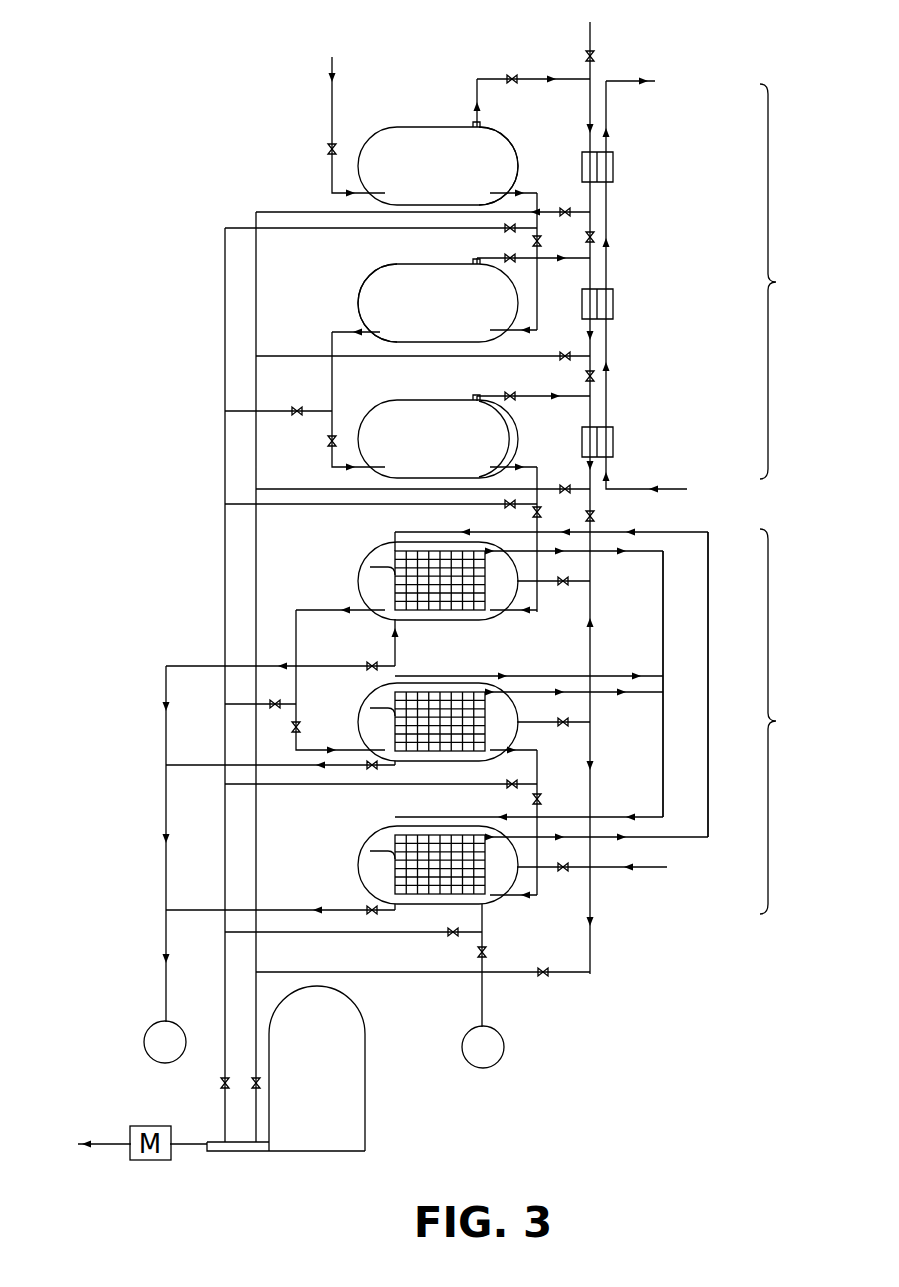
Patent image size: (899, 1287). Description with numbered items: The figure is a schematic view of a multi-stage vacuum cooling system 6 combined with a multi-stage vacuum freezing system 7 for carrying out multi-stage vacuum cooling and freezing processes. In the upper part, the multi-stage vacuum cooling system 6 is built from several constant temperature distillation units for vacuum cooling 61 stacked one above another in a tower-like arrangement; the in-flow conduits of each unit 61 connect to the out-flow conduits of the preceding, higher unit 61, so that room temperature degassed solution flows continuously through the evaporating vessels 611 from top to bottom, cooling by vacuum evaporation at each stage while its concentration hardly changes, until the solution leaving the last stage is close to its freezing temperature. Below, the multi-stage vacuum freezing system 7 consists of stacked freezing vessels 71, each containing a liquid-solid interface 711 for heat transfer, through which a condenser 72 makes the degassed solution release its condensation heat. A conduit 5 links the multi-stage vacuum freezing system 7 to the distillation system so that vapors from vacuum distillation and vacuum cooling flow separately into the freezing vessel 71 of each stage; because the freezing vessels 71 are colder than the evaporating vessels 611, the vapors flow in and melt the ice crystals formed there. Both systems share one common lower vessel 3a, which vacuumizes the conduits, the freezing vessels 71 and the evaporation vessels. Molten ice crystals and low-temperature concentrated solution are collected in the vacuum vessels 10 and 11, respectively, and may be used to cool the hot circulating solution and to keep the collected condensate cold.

The constant temperature distillation unit for vacuum cooling 61 is at (420, 122).
The evaporating vessel 611 is at (516, 148).
The multi-stage vacuum cooling system 6 is at (780, 281).
The multi-stage vacuum freezing system 7 is at (780, 721).
The freezing vessel 71 is at (490, 628).
The liquid-solid interface 711 is at (377, 568).
The condenser 72 is at (708, 840).
The conduit 5 is at (643, 870).
The lower vessel 3a is at (376, 1056).
The vacuum vessel 10 is at (165, 1042).
The vacuum vessel 11 is at (483, 1047).